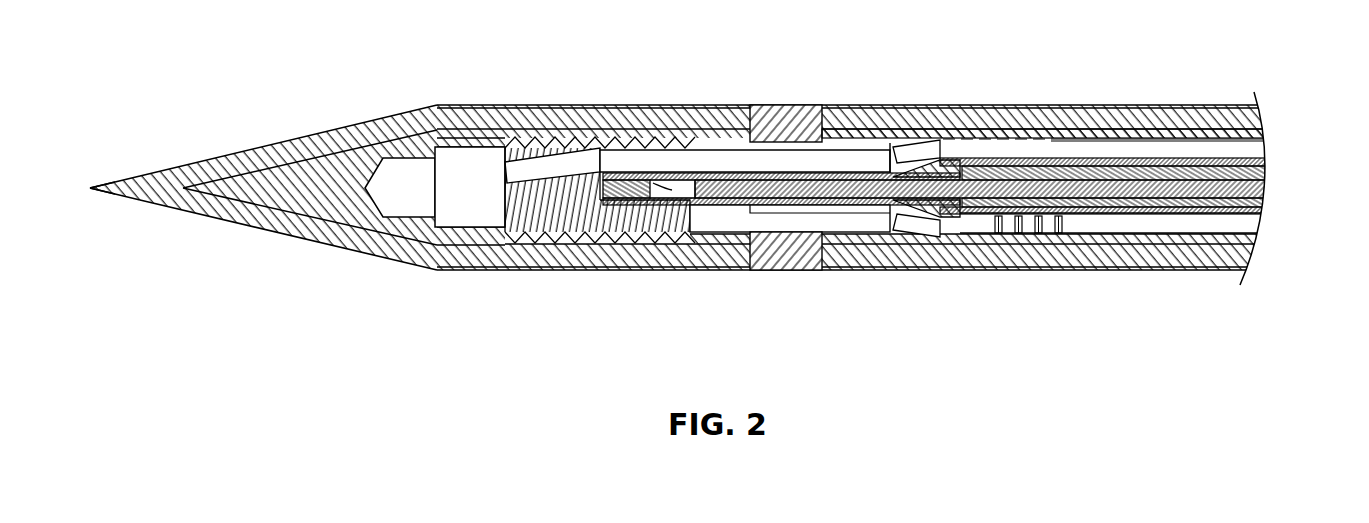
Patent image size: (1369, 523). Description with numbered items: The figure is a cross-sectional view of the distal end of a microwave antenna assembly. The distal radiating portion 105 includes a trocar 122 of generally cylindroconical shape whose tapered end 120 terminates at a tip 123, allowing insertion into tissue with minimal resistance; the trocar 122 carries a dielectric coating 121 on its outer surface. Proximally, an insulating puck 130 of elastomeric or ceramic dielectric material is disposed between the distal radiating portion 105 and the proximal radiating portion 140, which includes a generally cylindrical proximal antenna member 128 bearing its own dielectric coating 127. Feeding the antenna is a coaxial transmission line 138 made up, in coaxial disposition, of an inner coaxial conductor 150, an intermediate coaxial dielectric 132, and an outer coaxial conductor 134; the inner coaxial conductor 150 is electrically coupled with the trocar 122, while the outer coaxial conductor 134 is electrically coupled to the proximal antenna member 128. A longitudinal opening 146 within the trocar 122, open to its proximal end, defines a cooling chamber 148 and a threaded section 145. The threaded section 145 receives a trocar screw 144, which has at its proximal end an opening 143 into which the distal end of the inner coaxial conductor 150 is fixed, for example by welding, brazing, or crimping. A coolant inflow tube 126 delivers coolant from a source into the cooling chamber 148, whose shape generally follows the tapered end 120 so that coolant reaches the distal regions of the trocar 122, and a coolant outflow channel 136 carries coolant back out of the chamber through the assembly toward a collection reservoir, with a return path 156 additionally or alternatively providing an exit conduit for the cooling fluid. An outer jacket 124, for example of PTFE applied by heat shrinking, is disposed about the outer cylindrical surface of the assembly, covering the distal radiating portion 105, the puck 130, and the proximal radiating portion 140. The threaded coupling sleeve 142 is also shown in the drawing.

The distal radiating portion 105 is at (515, 300).
The tapered end 120 is at (250, 231).
The dielectric coating 121 is at (138, 177).
The trocar 122 is at (276, 153).
The tip 123 is at (89, 189).
The outer jacket 124 is at (758, 108).
The coolant inflow tube 126 is at (700, 160).
The dielectric coating 127 is at (1197, 115).
The proximal antenna member 128 is at (855, 135).
The insulating puck 130 is at (780, 252).
The intermediate coaxial dielectric 132 is at (1072, 170).
The outer coaxial conductor 134 is at (1127, 215).
The coolant outflow channel 136 is at (842, 220).
The coaxial transmission line 138 is at (1270, 164).
The proximal radiating portion 140 is at (1022, 318).
The sleeve 142 is at (645, 215).
The opening 143 is at (645, 175).
The trocar screw 144 is at (553, 215).
The threaded section 145 is at (507, 215).
The longitudinal opening 146 is at (480, 177).
The cooling chamber 148 is at (413, 187).
The inner coaxial conductor 150 is at (950, 198).
The return path 156 is at (1230, 225).